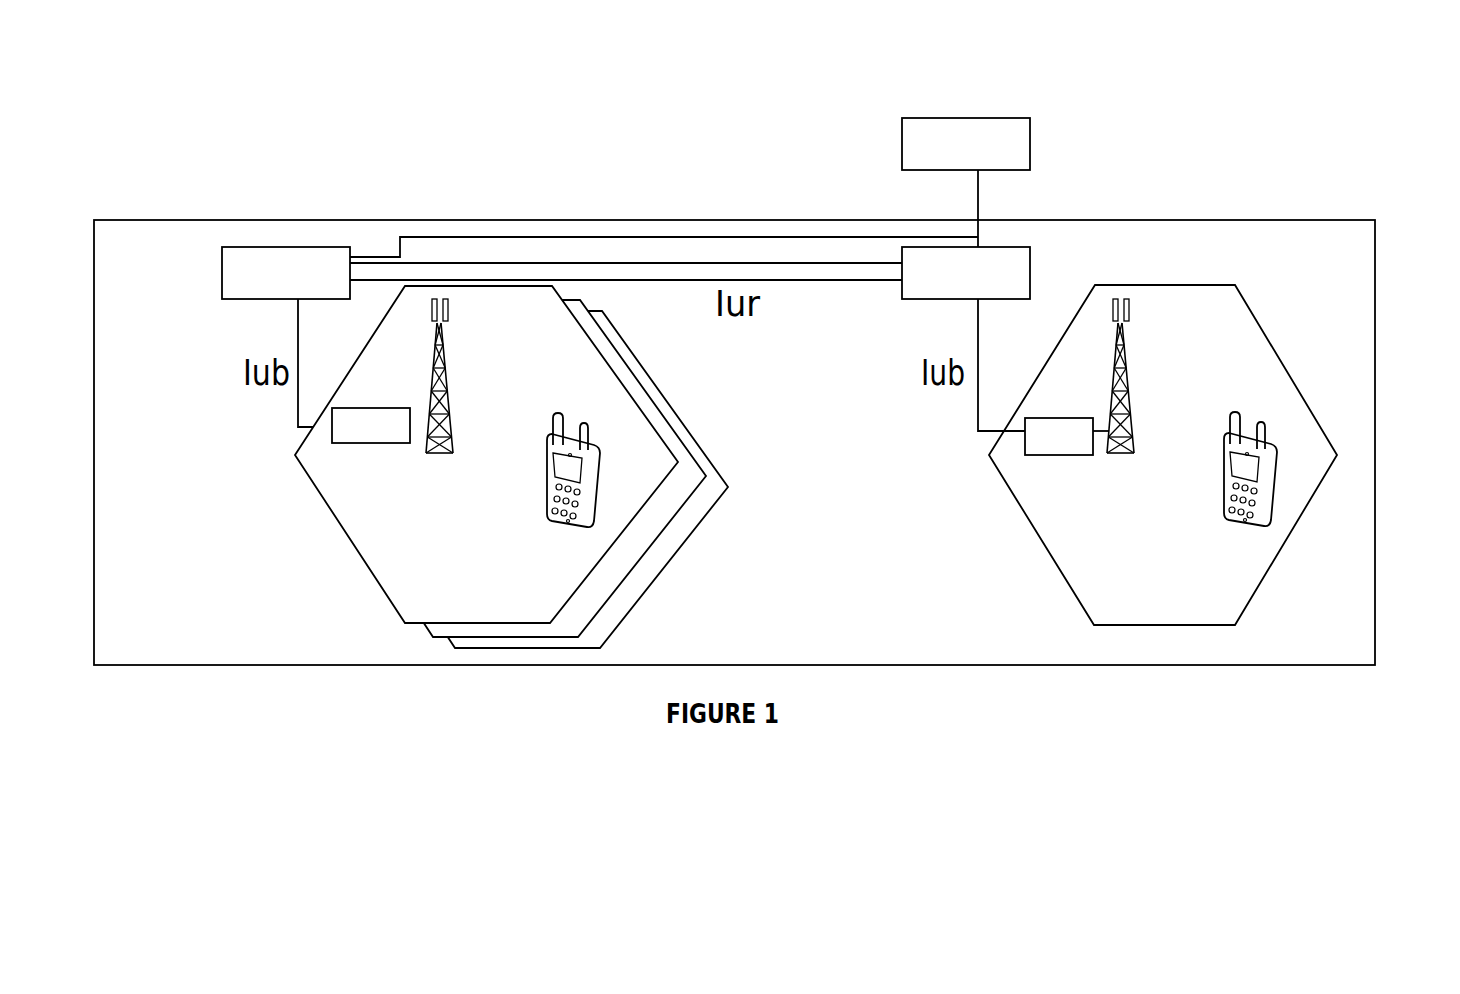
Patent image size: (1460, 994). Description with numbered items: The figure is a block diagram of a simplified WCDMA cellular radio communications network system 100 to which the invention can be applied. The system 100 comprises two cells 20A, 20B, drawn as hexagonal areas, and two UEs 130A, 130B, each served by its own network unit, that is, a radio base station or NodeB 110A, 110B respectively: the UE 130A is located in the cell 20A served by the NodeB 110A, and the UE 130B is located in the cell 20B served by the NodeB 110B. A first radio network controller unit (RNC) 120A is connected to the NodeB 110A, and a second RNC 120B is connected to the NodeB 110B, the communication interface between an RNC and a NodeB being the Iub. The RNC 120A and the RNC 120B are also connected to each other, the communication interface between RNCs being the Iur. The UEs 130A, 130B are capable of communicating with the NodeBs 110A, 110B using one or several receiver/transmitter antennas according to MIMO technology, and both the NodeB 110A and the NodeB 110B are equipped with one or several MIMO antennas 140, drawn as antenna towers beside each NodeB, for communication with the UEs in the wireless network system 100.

The wireless communications network system 100 is at (1254, 104).
The first radio network controller unit 120A is at (348, 247).
The second radio network controller unit 120B is at (1005, 273).
The cell 20A is at (543, 353).
The cell 20B is at (1222, 313).
The NodeB 110A is at (371, 425).
The NodeB 110B is at (1059, 436).
The UE 130A is at (600, 495).
The UE 130B is at (1279, 495).
The MIMO antennas 140 is at (423, 457).